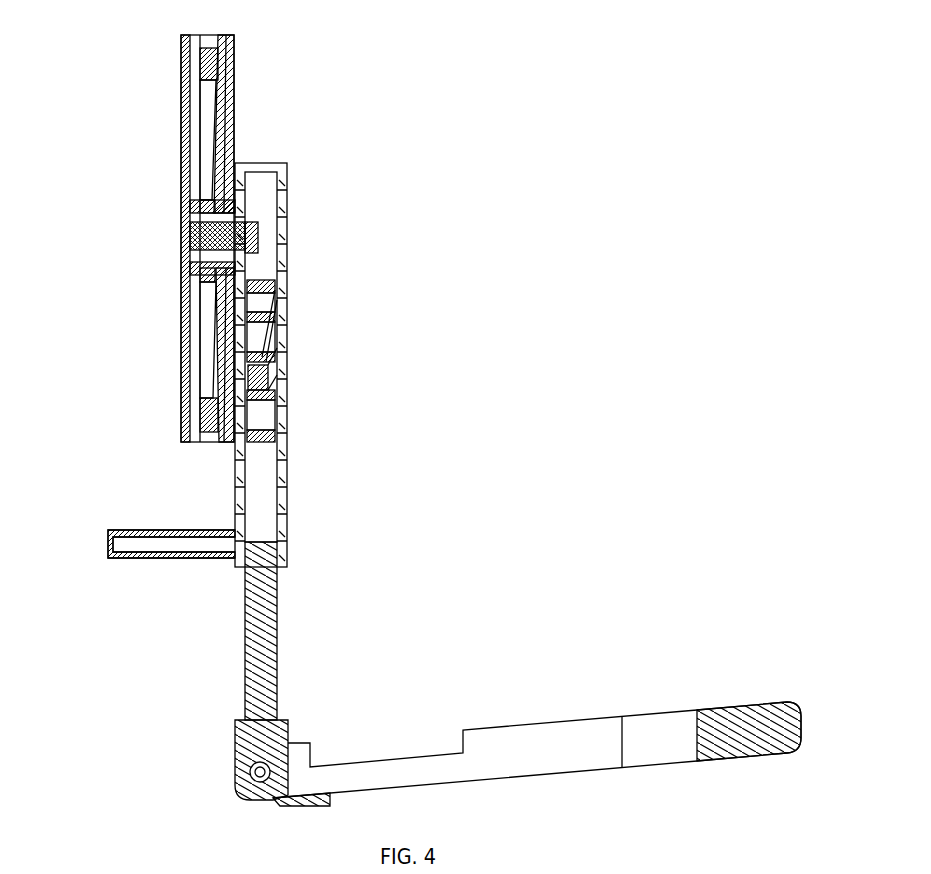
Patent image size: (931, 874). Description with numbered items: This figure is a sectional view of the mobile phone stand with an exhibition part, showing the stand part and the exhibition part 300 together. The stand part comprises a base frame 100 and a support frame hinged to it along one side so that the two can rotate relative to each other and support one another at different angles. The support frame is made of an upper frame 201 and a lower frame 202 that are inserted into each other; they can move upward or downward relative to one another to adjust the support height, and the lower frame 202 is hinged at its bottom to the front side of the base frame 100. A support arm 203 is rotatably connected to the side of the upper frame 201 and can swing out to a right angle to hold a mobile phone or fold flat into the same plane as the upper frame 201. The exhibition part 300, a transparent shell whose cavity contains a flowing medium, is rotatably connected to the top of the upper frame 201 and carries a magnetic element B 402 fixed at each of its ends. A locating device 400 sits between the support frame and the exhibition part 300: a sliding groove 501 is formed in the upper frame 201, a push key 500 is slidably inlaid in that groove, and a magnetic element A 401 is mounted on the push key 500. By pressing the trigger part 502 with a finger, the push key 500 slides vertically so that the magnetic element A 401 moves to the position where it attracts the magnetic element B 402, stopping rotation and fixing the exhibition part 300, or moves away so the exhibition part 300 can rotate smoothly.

The base frame 100 is at (731, 716).
The upper frame 201 is at (283, 480).
The lower frame 202 is at (270, 634).
The support arm 203 is at (128, 536).
The exhibition part 300 is at (186, 110).
The locating device 400 is at (276, 222).
The magnetic element A 401 is at (271, 375).
The magnetic element B 402 is at (208, 62).
The push key 500 is at (320, 332).
The sliding groove 501 is at (267, 278).
The trigger part 502 is at (281, 335).